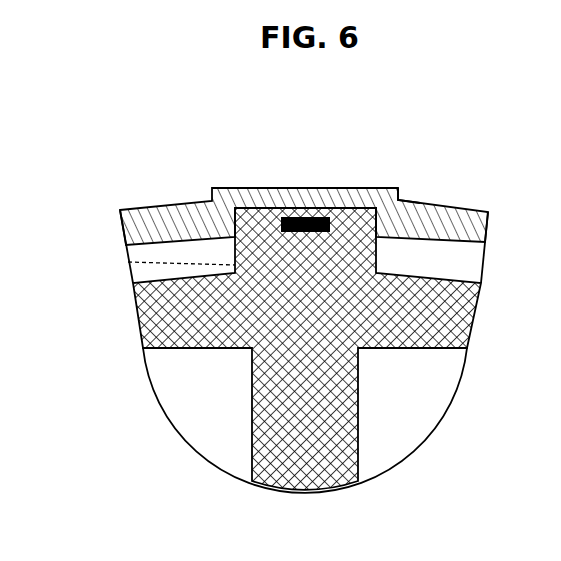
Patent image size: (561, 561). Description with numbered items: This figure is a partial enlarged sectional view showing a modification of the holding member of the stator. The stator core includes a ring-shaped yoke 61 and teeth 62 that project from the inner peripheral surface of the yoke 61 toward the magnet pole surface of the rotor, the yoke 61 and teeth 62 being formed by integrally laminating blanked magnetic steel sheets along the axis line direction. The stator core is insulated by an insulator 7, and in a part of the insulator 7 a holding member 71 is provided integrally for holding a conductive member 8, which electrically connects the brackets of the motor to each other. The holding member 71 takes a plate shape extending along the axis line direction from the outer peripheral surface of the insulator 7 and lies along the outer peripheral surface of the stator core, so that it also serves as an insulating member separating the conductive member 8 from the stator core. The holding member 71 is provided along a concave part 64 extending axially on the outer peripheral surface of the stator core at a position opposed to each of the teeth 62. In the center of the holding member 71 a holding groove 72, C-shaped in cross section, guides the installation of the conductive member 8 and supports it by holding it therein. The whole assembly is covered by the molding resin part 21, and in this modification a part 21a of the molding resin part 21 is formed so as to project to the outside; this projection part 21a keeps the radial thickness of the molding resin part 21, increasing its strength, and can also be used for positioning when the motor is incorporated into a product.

The insulator 7 is at (165, 352).
The conductive member 8 is at (308, 216).
The molding resin part 21 is at (457, 208).
The projection part 21a is at (392, 188).
The yoke 61 is at (483, 262).
The teeth 62 is at (251, 450).
The concave part 64 is at (128, 262).
The holding member 71 is at (350, 198).
The holding groove 72 is at (270, 207).